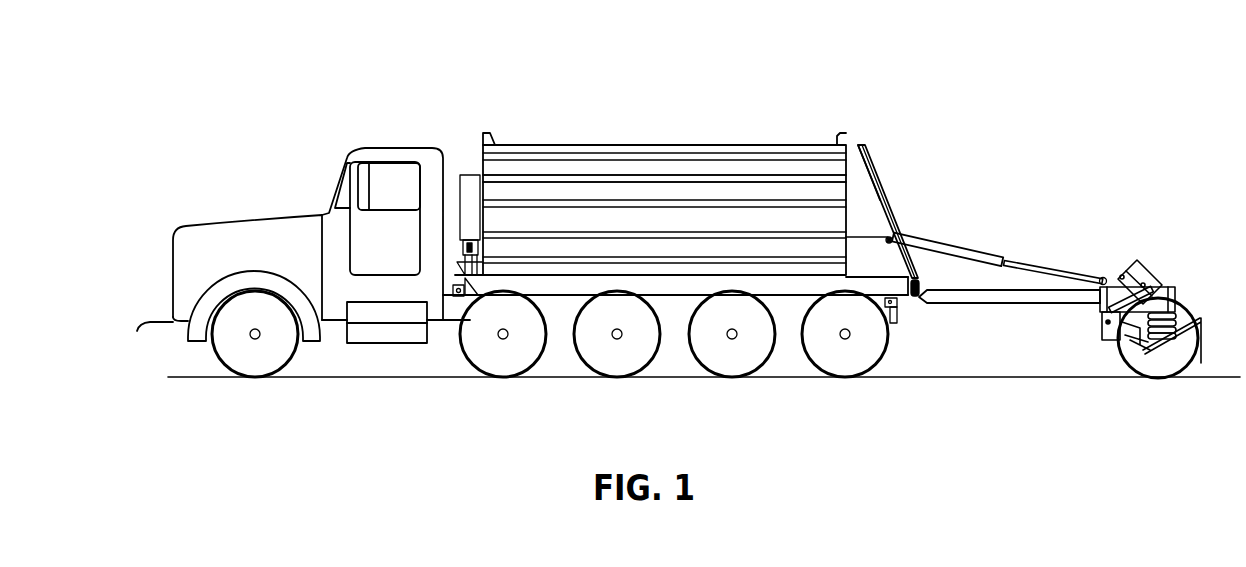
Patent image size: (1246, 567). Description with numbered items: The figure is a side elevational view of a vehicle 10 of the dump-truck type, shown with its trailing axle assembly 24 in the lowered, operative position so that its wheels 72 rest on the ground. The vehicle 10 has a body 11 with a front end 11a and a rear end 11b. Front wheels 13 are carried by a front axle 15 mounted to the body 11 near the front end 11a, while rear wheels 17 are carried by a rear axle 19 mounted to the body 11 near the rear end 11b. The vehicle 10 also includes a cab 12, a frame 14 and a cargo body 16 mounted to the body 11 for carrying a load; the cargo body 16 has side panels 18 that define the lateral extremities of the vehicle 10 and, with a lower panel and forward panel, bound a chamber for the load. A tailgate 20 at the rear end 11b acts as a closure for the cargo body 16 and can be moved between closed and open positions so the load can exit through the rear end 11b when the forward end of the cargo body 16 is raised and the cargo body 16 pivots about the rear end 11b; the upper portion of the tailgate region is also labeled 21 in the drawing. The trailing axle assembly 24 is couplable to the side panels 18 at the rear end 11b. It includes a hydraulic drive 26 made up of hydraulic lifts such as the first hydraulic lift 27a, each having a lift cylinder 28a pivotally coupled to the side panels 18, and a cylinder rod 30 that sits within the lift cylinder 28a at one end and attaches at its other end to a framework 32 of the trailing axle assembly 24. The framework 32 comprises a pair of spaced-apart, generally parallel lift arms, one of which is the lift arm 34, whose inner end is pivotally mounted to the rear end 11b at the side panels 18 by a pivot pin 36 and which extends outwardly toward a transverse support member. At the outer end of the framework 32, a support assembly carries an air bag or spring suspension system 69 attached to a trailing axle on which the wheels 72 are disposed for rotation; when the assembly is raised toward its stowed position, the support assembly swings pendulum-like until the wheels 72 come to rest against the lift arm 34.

The vehicle 10 is at (433, 110).
The body 11 is at (437, 333).
The front end 11a is at (137, 331).
The rear end 11b is at (900, 312).
The cab 12 is at (231, 222).
The front wheels 13 is at (262, 357).
The frame 14 is at (556, 313).
The front axle 15 is at (251, 339).
The cargo body 16 is at (620, 146).
The rear wheels 17 is at (857, 357).
The side panels 18 is at (718, 172).
The rear axle 19 is at (843, 339).
The tailgate 20 is at (887, 196).
The upper mast portion 21 is at (873, 173).
The trailing axle assembly 24 is at (1165, 270).
The hydraulic drive 26 is at (1031, 243).
The first hydraulic lift 27a is at (988, 237).
The lift cylinder 28a is at (942, 248).
The cylinder rod 30 is at (1077, 270).
The framework 32 is at (1040, 313).
The lift arm 34 is at (985, 303).
The pivot pin 36 is at (917, 298).
The spring suspension system 69 is at (1183, 315).
The wheels 72 is at (1165, 363).